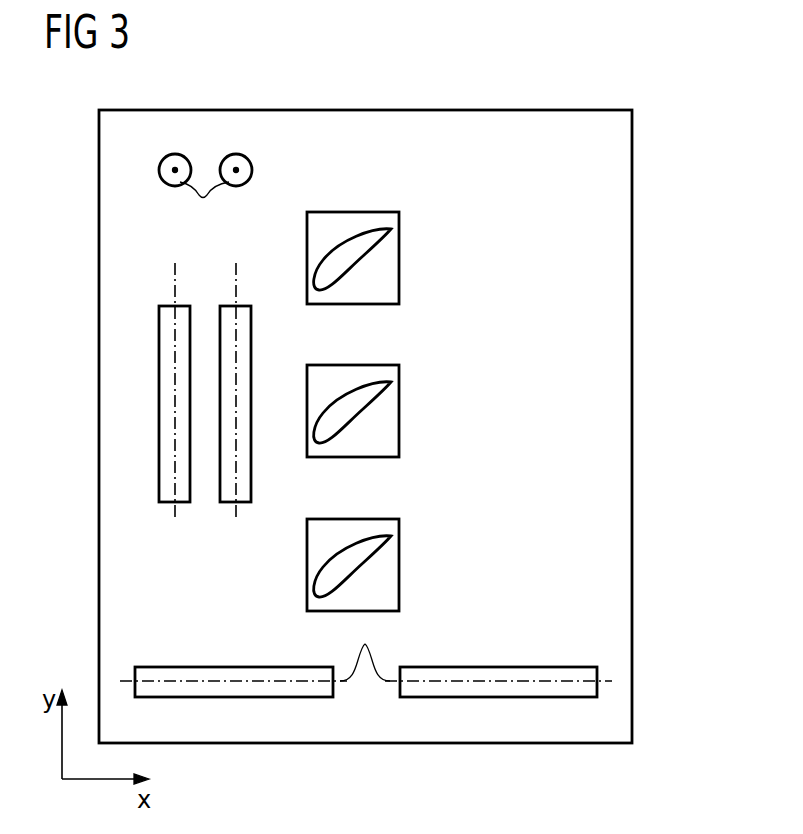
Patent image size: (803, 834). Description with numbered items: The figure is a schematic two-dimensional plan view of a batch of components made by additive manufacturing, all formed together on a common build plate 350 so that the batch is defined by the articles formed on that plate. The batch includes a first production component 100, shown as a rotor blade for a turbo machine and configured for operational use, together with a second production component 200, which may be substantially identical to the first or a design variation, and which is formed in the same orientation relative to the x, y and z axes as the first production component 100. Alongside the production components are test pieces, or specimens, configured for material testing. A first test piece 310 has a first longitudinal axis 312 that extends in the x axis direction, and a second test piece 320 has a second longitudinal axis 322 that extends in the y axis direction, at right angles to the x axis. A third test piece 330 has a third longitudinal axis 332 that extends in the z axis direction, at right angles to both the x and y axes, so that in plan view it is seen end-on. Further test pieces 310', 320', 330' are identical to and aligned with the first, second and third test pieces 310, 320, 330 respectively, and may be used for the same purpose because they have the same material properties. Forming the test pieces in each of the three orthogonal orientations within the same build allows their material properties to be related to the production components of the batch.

The first production component 100 is at (388, 258).
The second production component 200 is at (388, 416).
The first test piece 310 is at (233, 654).
The further test piece 310' is at (498, 653).
The first longitudinal axis 312 is at (365, 649).
The second test piece 320 is at (116, 404).
The further test piece 320' is at (276, 404).
The second longitudinal axis 322 is at (235, 300).
The third test piece 330 is at (115, 173).
The further test piece 330' is at (275, 173).
The third longitudinal axis 332 is at (204, 210).
The build plate 350 is at (619, 284).